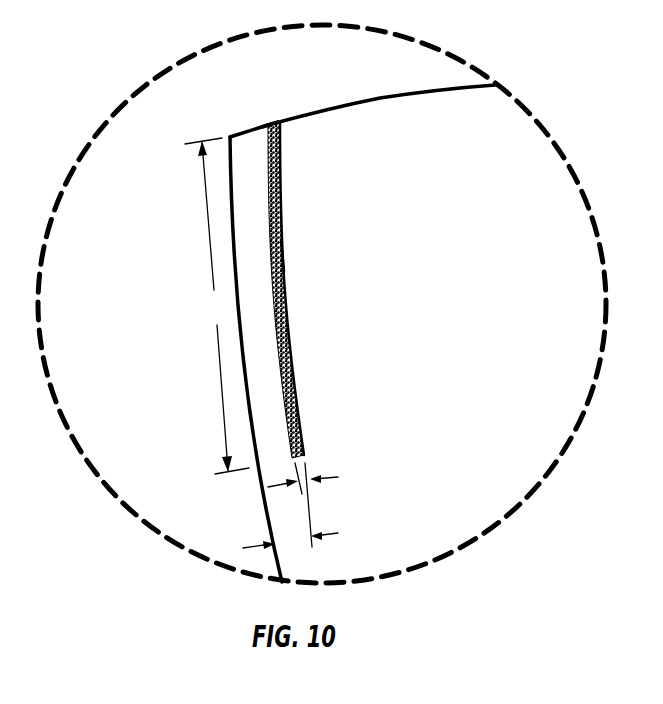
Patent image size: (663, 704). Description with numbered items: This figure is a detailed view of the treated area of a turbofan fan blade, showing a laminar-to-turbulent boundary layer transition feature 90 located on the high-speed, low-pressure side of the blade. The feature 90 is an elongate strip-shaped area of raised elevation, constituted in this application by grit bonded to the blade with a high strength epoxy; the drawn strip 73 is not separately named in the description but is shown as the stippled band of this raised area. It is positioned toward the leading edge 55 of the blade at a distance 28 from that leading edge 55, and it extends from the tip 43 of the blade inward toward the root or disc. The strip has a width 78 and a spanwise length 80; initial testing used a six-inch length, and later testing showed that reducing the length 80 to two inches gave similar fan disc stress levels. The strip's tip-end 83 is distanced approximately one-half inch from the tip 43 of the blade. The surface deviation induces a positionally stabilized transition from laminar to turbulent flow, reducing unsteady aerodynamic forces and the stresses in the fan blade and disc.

The tip 43 is at (365, 100).
The leading edge 55 is at (241, 358).
The layer 73 is at (277, 181).
The tip-end 83 is at (272, 124).
The laminar-to-turbulent boundary layer transition feature 90 is at (281, 257).
The length 80 is at (217, 306).
The width 78 is at (317, 505).
The distance 28 is at (304, 535).